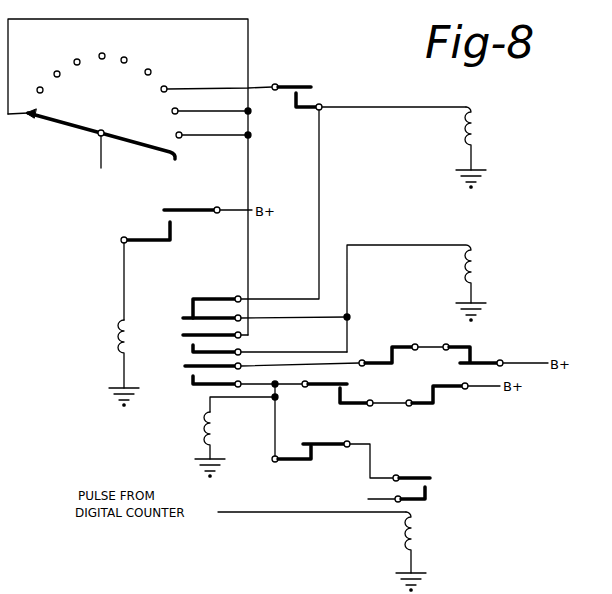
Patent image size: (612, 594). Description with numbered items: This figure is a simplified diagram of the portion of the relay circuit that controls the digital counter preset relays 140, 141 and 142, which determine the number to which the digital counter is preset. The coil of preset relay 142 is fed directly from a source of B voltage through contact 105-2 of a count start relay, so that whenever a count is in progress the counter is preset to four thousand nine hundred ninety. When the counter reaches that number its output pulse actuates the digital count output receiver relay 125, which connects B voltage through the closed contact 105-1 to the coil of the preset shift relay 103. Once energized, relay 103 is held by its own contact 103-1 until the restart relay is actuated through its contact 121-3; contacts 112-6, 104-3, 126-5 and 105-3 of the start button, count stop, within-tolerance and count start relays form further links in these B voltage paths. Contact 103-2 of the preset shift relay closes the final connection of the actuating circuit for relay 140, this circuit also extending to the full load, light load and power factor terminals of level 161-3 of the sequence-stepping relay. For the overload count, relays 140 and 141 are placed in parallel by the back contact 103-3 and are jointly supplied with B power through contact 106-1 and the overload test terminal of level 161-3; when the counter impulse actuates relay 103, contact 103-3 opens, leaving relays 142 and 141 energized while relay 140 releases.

The level of sequence-stepping relay 161-3 is at (113, 120).
The contact of count start relay 106-1 is at (300, 97).
The digital counter preset relay 141 is at (465, 128).
The contact of count start relay 105-2 is at (173, 228).
The digital counter preset relay 142 is at (118, 346).
The back contact of preset shift relay 103-3 is at (212, 308).
The contact of preset shift relay 103-2 is at (212, 343).
The holding contact of preset shift relay 103-1 is at (213, 375).
The digital counter preset relay 140 is at (465, 258).
The contact of restart relay 121-3 is at (395, 352).
The contact of start button relay 112-6 is at (474, 357).
The contact of count stop relay 104-3 is at (343, 393).
The contact of within-tolerance relay 126-5 is at (437, 393).
The preset shift relay 103 is at (204, 431).
The contact of count start relay 105-1 is at (314, 451).
The contact of count start relay 105-3 is at (428, 494).
The digital count output receiver relay 125 is at (416, 530).